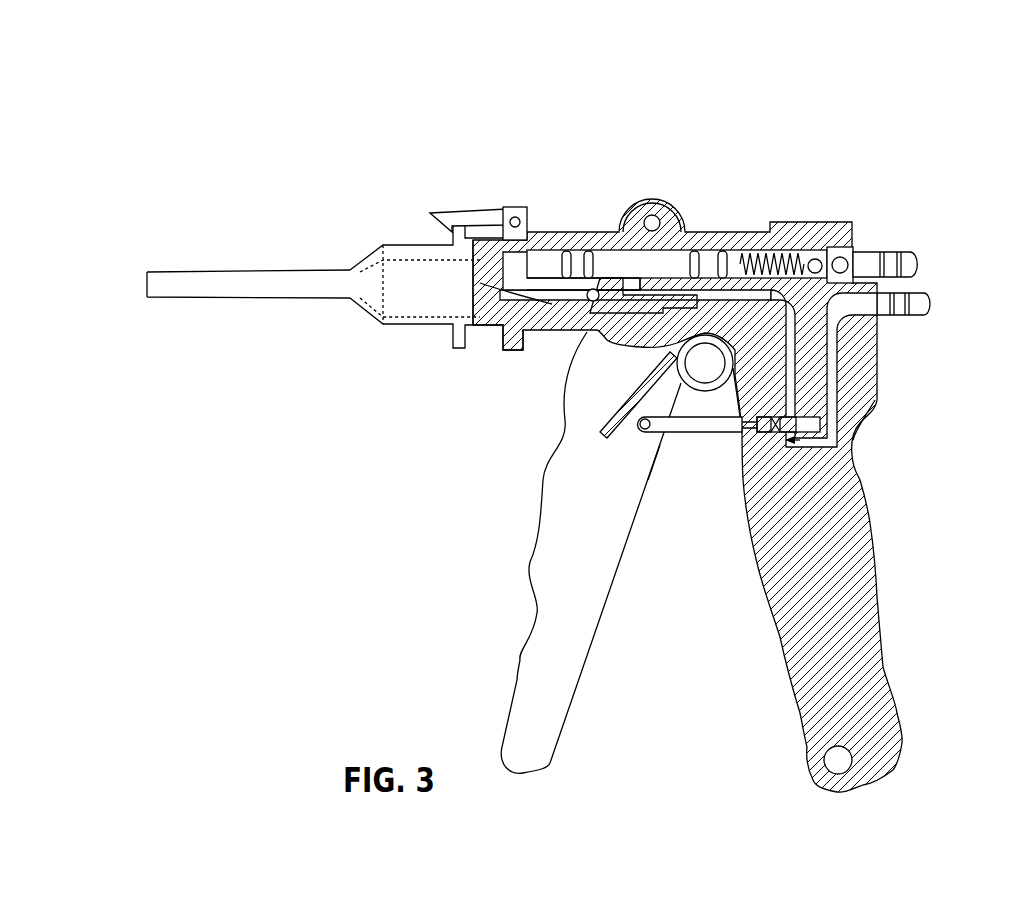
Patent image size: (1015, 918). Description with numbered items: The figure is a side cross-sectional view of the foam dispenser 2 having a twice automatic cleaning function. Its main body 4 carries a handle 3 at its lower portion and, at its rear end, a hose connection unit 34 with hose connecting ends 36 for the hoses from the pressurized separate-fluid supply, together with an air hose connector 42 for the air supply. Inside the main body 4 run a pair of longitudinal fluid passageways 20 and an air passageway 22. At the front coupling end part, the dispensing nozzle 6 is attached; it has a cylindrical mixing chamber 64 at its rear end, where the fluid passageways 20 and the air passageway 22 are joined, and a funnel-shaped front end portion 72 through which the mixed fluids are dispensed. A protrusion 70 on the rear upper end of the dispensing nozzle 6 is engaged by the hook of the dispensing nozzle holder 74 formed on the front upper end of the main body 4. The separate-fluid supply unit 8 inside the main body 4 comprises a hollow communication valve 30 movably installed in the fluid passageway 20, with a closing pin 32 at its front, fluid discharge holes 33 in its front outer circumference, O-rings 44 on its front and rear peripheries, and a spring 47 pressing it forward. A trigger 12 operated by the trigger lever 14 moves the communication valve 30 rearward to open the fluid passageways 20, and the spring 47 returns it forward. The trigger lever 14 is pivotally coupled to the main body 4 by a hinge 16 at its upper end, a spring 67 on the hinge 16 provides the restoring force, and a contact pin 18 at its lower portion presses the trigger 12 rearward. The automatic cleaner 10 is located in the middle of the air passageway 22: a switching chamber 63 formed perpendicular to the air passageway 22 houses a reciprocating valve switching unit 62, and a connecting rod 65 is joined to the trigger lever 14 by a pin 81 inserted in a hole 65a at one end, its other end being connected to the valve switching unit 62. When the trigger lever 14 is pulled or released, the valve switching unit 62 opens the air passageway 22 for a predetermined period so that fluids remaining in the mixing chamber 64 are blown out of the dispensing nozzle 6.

The foam dispenser 2 is at (237, 111).
The handle 3 is at (872, 560).
The main body 4 is at (836, 210).
The dispensing nozzle 6 is at (205, 262).
The separate-fluid supply unit 8 is at (902, 242).
The automatic cleaner 10 is at (822, 412).
The trigger 12 is at (605, 235).
The trigger lever 14 is at (555, 708).
The hinge 16 is at (657, 200).
The contact pin 18 is at (583, 242).
The fluid passageways 20 is at (782, 222).
The air passageway 22 is at (862, 307).
The communication valve 30 is at (688, 231).
The closing pin 32 is at (516, 207).
The fluid discharge holes 33 is at (530, 236).
The hose connection unit 34 is at (853, 258).
The hose connecting ends 36 is at (905, 265).
The air hose connector 42 is at (925, 303).
The O-rings 44 is at (558, 256).
The spring 47 is at (760, 240).
The valve switching unit 62 is at (765, 433).
The switching chamber 63 is at (855, 446).
The mixing chamber 64 is at (415, 265).
The connecting rod 65 is at (683, 434).
The hole 65a is at (648, 482).
The spring 67 is at (678, 357).
The protrusion 70 is at (445, 214).
The front end portion 72 is at (285, 283).
The dispensing nozzle holder 74 is at (496, 213).
The pin 81 is at (640, 430).